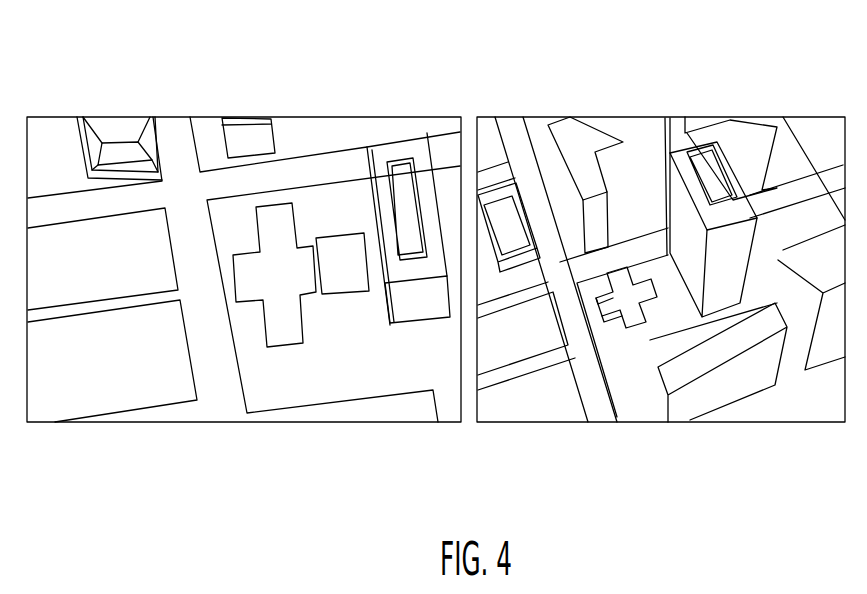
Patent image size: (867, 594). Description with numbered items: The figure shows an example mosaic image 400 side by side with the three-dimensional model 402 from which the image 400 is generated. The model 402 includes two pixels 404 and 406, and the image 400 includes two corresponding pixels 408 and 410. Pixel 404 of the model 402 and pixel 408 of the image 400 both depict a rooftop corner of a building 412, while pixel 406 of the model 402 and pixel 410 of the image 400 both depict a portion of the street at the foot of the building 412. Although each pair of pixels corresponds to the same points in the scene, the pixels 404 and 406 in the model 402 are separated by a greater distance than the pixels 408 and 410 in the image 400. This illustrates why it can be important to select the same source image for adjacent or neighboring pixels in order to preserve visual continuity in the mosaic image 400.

The image 400 is at (316, 84).
The 3D model 402 is at (593, 88).
The pixel 404 is at (666, 145).
The pixel 406 is at (665, 252).
The pixel 408 is at (362, 135).
The pixel 410 is at (358, 187).
The building 412 is at (408, 297).